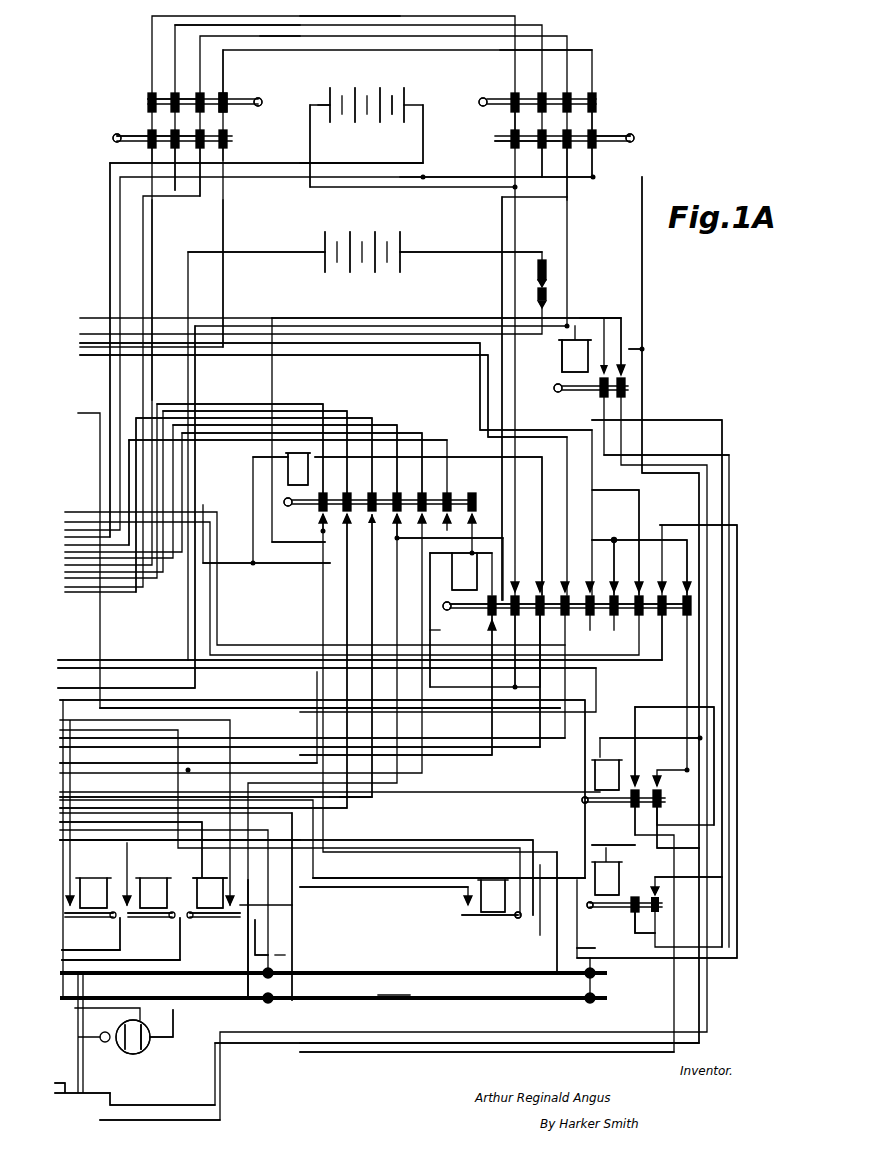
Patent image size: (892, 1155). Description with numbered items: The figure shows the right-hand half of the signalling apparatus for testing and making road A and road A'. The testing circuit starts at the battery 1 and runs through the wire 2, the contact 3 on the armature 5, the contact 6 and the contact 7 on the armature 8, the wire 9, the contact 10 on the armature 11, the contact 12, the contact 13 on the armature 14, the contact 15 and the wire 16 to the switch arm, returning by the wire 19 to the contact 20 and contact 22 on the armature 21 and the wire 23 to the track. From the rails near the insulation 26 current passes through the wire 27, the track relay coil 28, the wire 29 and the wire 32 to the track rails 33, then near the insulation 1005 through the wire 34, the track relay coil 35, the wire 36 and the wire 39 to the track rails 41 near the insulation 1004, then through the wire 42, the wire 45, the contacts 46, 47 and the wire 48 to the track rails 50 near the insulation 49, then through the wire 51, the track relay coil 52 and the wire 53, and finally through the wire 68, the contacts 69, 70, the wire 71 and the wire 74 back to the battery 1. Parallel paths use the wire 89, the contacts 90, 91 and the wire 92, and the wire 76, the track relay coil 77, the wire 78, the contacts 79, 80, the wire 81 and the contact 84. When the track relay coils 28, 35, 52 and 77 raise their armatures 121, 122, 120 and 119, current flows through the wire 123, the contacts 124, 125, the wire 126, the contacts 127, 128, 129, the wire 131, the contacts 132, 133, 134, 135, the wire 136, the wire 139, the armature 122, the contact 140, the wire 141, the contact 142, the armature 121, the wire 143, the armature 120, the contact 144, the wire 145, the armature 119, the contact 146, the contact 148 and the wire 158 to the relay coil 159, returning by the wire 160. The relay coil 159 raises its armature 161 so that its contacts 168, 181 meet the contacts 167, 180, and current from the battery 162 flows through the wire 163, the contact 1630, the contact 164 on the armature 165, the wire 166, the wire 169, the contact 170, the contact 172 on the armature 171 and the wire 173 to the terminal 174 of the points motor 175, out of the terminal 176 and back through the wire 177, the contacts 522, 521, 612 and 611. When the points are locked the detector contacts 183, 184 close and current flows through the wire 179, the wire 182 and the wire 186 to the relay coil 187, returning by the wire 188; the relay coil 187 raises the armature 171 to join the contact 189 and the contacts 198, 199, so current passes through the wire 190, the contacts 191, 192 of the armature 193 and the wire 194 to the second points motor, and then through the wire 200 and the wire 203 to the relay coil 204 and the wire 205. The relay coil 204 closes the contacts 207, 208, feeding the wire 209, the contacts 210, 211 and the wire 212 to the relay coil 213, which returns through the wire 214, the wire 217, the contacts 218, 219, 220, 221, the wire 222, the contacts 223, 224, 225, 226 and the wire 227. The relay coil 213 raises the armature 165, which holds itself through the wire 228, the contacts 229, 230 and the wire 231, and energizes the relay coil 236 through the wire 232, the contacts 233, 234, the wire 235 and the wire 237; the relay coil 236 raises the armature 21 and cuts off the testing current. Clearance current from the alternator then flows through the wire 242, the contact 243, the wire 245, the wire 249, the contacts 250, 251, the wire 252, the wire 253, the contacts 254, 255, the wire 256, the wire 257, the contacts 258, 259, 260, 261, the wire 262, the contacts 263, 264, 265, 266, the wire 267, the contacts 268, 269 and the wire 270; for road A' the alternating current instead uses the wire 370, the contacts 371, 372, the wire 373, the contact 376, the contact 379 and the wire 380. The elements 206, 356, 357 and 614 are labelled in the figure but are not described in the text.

The battery 1 is at (400, 90).
The wire 2 is at (310, 140).
The contact 3 is at (510, 146).
The armature 5 is at (640, 136).
The contact 6 is at (510, 128).
The contact 7 is at (512, 98).
The armature 8 is at (481, 106).
The wire 9 is at (355, 16).
The contact 10 is at (145, 95).
The armature 11 is at (262, 102).
The contact 12 is at (146, 110).
The contact 13 is at (146, 136).
The armature 14 is at (114, 136).
The contact 15 is at (146, 148).
The wire 16 is at (153, 260).
The wire 19 is at (330, 404).
The contact 20 is at (324, 493).
The armature 21 is at (288, 506).
The contact 22 is at (319, 515).
The wire 23 is at (318, 690).
The insulation 26 is at (264, 961).
The wire 27 is at (264, 937).
The track relay coil 28 is at (210, 893).
The wire 29 is at (202, 877).
The wire 32 is at (285, 955).
The track rails 33 is at (420, 973).
The wire 34 is at (594, 947).
The track relay coil 35 is at (493, 896).
The wire 36 is at (372, 878).
The wire 39 is at (555, 958).
The track rails 41 is at (432, 998).
The wire 42 is at (292, 920).
The wire 45 is at (400, 425).
The contact 46 is at (398, 493).
The contact 47 is at (404, 522).
The wire 48 is at (236, 939).
The insulation 49 is at (270, 1000).
The track rails 50 is at (238, 998).
The wire 51 is at (182, 960).
The track relay coil 52 is at (153, 893).
The wire 53 is at (135, 848).
The wire 68 is at (345, 810).
The contact 69 is at (334, 524).
The contact 70 is at (348, 493).
The wire 71 is at (350, 411).
The wire 74 is at (143, 585).
The wire 76 is at (91, 944).
The track relay coil 77 is at (93, 893).
The wire 78 is at (205, 763).
The contact 79 is at (428, 522).
The contact 80 is at (423, 493).
The wire 81 is at (424, 433).
The contact 84 is at (181, 982).
The wire 89 is at (366, 797).
The contact 90 is at (363, 522).
The contact 91 is at (373, 493).
The wire 92 is at (136, 592).
The armature 119 is at (90, 924).
The armature 120 is at (154, 924).
The armature 121 is at (215, 924).
The armature 122 is at (518, 918).
The wire 123 is at (318, 542).
The contact 124 is at (457, 522).
The contact 125 is at (448, 493).
The wire 126 is at (447, 447).
The contact 127 is at (163, 169).
The contact 128 is at (158, 132).
The contact 129 is at (170, 95).
The wire 131 is at (567, 25).
The contact 132 is at (540, 92).
The contact 133 is at (529, 119).
The contact 134 is at (197, 95).
The contact 135 is at (542, 160).
The wire 136 is at (400, 163).
The wire 139 is at (532, 840).
The contact 140 is at (465, 903).
The wire 141 is at (375, 887).
The contact 142 is at (243, 905).
The wire 143 is at (182, 930).
The contact 144 is at (122, 930).
The wire 145 is at (127, 895).
The contact 146 is at (68, 908).
The contact 148 is at (413, 620).
The wire 158 is at (560, 340).
The relay coil 159 is at (575, 356).
The wire 160 is at (642, 349).
The armature 161 is at (555, 390).
The battery 162 is at (382, 232).
The wire 163 is at (492, 755).
The contact 164 is at (570, 612).
The armature 165 is at (447, 611).
The wire 166 is at (503, 540).
The contact 167 is at (625, 370).
The contact 168 is at (625, 385).
The wire 169 is at (614, 455).
The contact 170 is at (631, 800).
The armature 171 is at (585, 804).
The contact 172 is at (635, 808).
The wire 173 is at (572, 1052).
The terminal 174 is at (146, 1050).
The points motor 175 is at (122, 1052).
The terminal 176 is at (145, 1022).
The wire 177 is at (173, 1020).
The wire 179 is at (612, 318).
The contact 180 is at (577, 333).
The contact 181 is at (604, 397).
The wire 182 is at (710, 1043).
The detector contact 183 is at (100, 1120).
The detector contact 184 is at (112, 1097).
The wire 186 is at (540, 1043).
The relay coil 187 is at (607, 775).
The wire 188 is at (640, 760).
The contact 189 is at (640, 777).
The wire 190 is at (675, 707).
The contact 191 is at (633, 915).
The contact 192 is at (631, 905).
The armature 193 is at (591, 910).
The wire 194 is at (585, 700).
The contact 198 is at (668, 778).
The contact 199 is at (662, 795).
The wire 200 is at (671, 835).
The wire 203 is at (540, 747).
The relay coil 204 is at (607, 878).
The wire 205 is at (660, 882).
The conductor 206 is at (540, 940).
The contact 207 is at (650, 929).
The contact 208 is at (665, 900).
The wire 209 is at (705, 420).
The contact 210 is at (476, 500).
The contact 211 is at (476, 515).
The wire 212 is at (465, 552).
The relay coil 213 is at (465, 571).
The wire 214 is at (292, 563).
The wire 217 is at (226, 290).
The contact 218 is at (228, 148).
The contact 219 is at (228, 138).
The contact 220 is at (228, 112).
The contact 221 is at (228, 95).
The wire 222 is at (348, 80).
The contact 223 is at (598, 95).
The contact 224 is at (598, 118).
The contact 225 is at (611, 132).
The contact 226 is at (598, 155).
The wire 227 is at (596, 172).
The wire 228 is at (510, 230).
The contact 229 is at (508, 574).
The contact 230 is at (504, 617).
The wire 231 is at (515, 687).
The wire 232 is at (540, 687).
The contact 233 is at (527, 617).
The contact 234 is at (532, 574).
The wire 235 is at (542, 460).
The relay coil 236 is at (298, 469).
The wire 237 is at (253, 457).
The wire 242 is at (650, 672).
The contact 243 is at (601, 617).
The wire 245 is at (614, 540).
The wire 249 is at (339, 709).
The contact 250 is at (551, 617).
The contact 251 is at (557, 574).
The wire 252 is at (557, 540).
The wire 253 is at (583, 430).
The contact 254 is at (582, 574).
The contact 255 is at (576, 617).
The wire 256 is at (595, 663).
The wire 257 is at (108, 612).
The contact 258 is at (189, 172).
The contact 259 is at (186, 132).
The contact 260 is at (211, 132).
The contact 261 is at (221, 95).
The wire 262 is at (600, 50).
The contact 263 is at (566, 92).
The contact 264 is at (553, 133).
The contact 265 is at (578, 133).
The contact 266 is at (567, 160).
The wire 267 is at (639, 490).
The contact 268 is at (630, 574).
The contact 269 is at (625, 617).
The wire 270 is at (444, 632).
The conductor 356 is at (143, 849).
The relay armature 357 is at (230, 895).
The wire 370 is at (268, 708).
The contact 371 is at (649, 618).
The contact 372 is at (663, 543).
The wire 373 is at (658, 958).
The contact 376 is at (674, 618).
The contact 379 is at (677, 571).
The wire 380 is at (688, 536).
The contact 521 is at (548, 294).
The contact 522 is at (548, 306).
The contact 611 is at (548, 265).
The contact 612 is at (548, 283).
The conductor 614 is at (470, 252).
The insulation 1004 is at (596, 1001).
The insulation 1005 is at (596, 976).
The contact 1630 is at (479, 629).